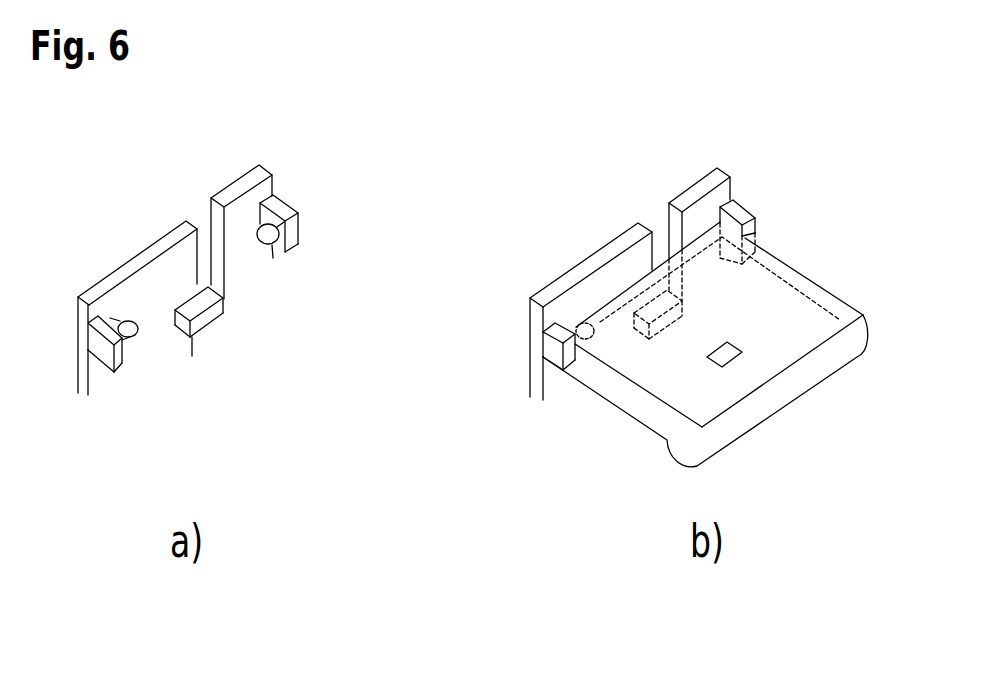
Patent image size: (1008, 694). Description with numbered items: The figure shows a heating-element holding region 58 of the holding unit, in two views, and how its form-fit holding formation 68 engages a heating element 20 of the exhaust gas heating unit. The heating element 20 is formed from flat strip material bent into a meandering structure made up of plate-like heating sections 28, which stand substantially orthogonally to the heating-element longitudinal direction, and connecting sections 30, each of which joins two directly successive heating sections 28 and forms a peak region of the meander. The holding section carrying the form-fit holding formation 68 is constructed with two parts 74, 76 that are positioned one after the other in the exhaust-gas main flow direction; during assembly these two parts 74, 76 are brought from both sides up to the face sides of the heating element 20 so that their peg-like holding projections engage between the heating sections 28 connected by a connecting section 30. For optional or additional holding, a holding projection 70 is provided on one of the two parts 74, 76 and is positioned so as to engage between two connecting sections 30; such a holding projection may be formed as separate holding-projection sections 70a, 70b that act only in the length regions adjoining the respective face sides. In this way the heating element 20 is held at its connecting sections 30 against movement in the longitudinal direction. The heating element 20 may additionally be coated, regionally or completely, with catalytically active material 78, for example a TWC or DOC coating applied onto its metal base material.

The heating element 20 is at (797, 371).
The heating sections 28 is at (802, 267).
The connecting sections 30 is at (662, 262).
The heating-element holding region 58 is at (138, 260).
The form-fit holding formation 68 is at (122, 418).
The holding projection 70 is at (207, 315).
The holding-projection section 70a is at (127, 358).
The holding-projection section 70b is at (290, 250).
The part 74 is at (170, 243).
The part 76 is at (249, 183).
The catalytically active material 78 is at (731, 362).